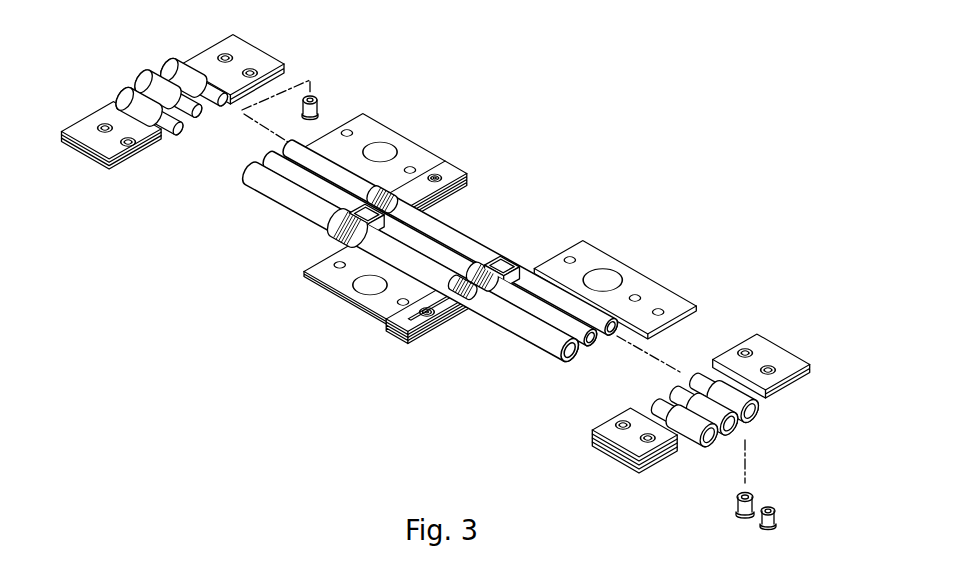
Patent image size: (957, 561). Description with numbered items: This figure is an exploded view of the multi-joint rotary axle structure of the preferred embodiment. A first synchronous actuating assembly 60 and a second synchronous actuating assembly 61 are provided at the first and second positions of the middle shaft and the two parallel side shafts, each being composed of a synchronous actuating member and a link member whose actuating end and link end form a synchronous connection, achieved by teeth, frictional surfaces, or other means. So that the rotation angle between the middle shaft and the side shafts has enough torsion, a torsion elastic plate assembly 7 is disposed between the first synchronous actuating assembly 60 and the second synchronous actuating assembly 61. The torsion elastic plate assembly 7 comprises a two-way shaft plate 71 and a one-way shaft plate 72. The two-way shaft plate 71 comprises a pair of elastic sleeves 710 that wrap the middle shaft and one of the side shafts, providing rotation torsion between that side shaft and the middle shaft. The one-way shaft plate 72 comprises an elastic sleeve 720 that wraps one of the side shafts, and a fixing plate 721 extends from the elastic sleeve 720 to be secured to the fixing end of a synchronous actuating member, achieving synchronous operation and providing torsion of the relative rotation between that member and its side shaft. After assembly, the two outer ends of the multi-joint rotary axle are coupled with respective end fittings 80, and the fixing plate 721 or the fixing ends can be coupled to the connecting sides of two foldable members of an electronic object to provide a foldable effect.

The torsion elastic plate assembly 7 is at (447, 253).
The first synchronous actuating assembly 60 is at (510, 250).
The second synchronous actuating assembly 61 is at (331, 241).
The two-way shaft plate 71 is at (411, 269).
The elastic sleeves 710 is at (537, 303).
The one-way shaft plate 72 is at (447, 251).
The elastic sleeve 720 is at (560, 293).
The fixing plate 721 is at (397, 137).
The end fittings 80 is at (133, 70).